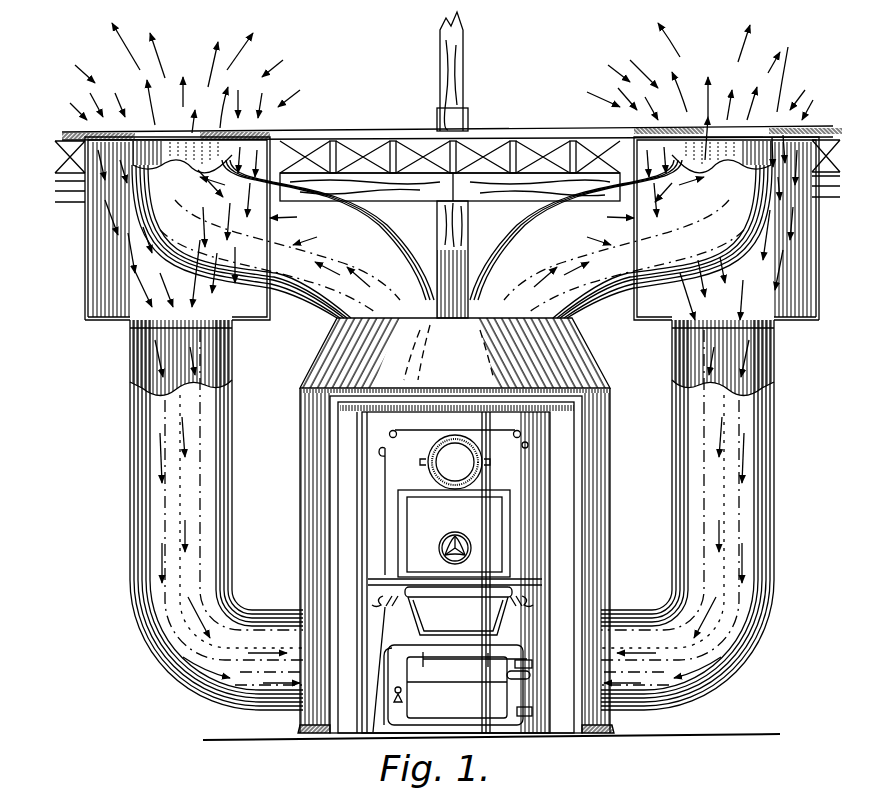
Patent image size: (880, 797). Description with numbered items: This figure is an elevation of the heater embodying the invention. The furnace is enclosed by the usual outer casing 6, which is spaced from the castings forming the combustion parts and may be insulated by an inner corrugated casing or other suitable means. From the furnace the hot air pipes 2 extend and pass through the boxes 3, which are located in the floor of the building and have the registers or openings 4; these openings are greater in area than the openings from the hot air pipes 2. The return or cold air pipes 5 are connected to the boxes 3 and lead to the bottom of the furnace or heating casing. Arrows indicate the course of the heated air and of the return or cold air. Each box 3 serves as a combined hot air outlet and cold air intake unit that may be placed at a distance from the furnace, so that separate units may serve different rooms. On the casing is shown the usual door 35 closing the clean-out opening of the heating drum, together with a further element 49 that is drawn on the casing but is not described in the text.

The hot air pipes 2 is at (446, 170).
The boxes 3 is at (815, 250).
The registers or openings 4 is at (774, 123).
The return or cold air pipes 5 is at (795, 470).
The outer casing 6 is at (313, 458).
The door 35 is at (428, 470).
The door handle 49 is at (488, 545).